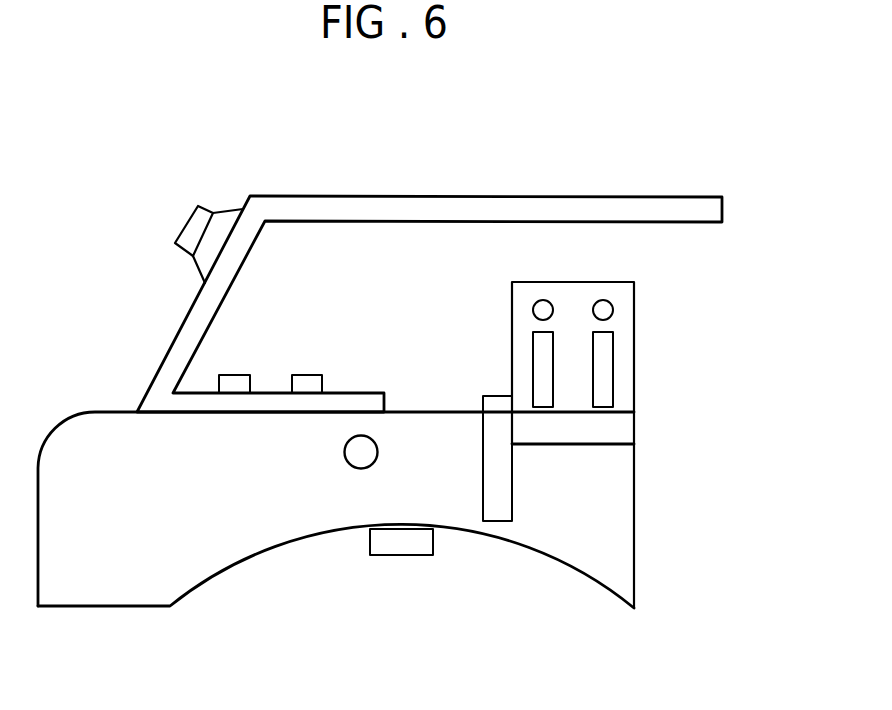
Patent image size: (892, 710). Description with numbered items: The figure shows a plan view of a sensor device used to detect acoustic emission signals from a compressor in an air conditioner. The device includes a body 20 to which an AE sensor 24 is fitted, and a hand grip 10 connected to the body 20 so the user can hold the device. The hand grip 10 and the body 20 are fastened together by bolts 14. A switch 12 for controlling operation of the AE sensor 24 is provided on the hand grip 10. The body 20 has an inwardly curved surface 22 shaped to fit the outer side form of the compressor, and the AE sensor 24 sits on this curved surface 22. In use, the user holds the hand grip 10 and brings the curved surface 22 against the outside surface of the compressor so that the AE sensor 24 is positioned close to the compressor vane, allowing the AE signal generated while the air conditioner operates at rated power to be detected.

The hand grip 10 is at (450, 193).
The switch 12 is at (193, 230).
The bolts 14 is at (305, 383).
The body 20 is at (640, 470).
The curved surface 22 is at (260, 553).
The AE sensor 24 is at (403, 543).